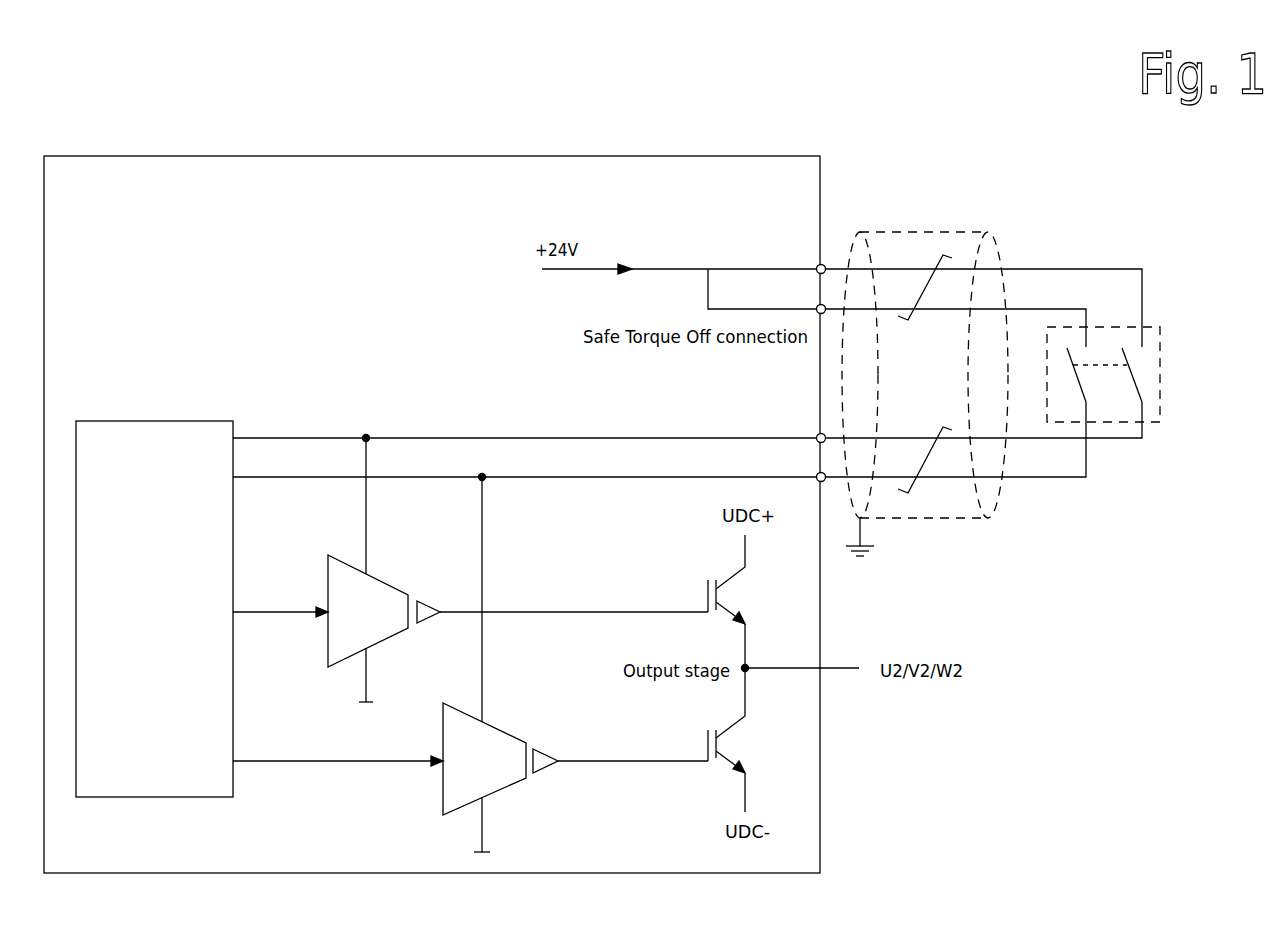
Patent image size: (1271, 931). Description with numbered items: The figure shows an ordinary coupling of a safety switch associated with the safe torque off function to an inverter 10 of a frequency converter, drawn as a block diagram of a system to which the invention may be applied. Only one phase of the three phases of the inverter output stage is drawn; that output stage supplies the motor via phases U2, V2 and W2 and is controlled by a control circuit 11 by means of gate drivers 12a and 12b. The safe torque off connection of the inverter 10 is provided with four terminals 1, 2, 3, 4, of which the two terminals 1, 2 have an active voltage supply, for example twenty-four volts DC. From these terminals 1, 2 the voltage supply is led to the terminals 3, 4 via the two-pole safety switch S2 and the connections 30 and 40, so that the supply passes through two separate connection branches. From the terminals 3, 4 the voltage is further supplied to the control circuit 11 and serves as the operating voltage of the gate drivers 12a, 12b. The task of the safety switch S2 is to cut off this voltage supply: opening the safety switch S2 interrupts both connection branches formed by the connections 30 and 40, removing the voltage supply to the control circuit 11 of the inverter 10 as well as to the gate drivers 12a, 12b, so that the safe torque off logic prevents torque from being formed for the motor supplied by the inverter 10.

The inverter 10 is at (156, 155).
The control circuit 11 is at (156, 420).
The gate driver 12a is at (395, 583).
The gate driver 12b is at (517, 735).
The connection 30 is at (1040, 304).
The connection 40 is at (1040, 469).
The safety switch S2 is at (1118, 374).
The terminal 1 is at (814, 256).
The terminal 2 is at (814, 297).
The terminal 3 is at (814, 426).
The terminal 4 is at (814, 466).